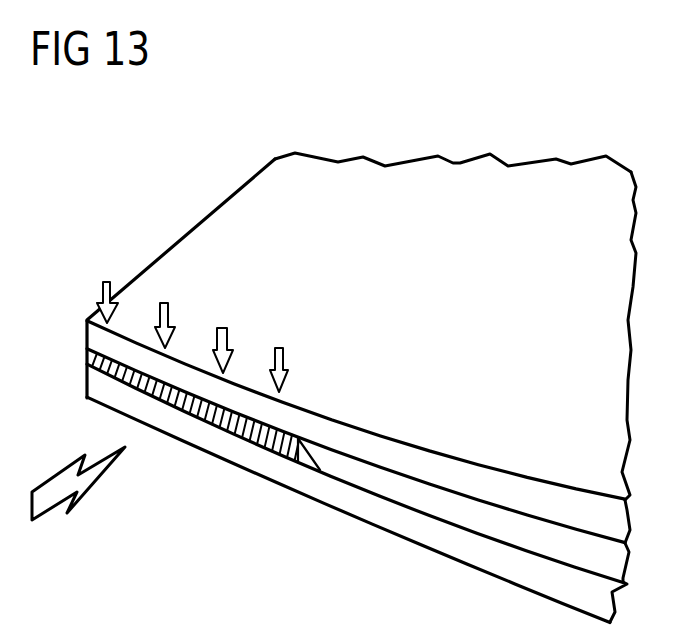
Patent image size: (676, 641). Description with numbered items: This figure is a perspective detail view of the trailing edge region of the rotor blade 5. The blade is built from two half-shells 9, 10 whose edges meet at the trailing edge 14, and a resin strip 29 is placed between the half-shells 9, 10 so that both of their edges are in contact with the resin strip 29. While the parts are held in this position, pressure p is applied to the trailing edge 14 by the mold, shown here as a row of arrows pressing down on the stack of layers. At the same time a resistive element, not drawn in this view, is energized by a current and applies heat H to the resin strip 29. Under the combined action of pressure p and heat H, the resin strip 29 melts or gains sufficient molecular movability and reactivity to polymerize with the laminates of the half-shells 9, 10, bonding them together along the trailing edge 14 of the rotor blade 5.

The rotor blade 5 is at (90, 181).
The half-shell 9 is at (446, 173).
The trailing edge 14 is at (82, 320).
The resin strip 29 is at (213, 427).
The half-shell 10 is at (325, 495).
The pressure p is at (112, 302).
The heat H is at (78, 492).